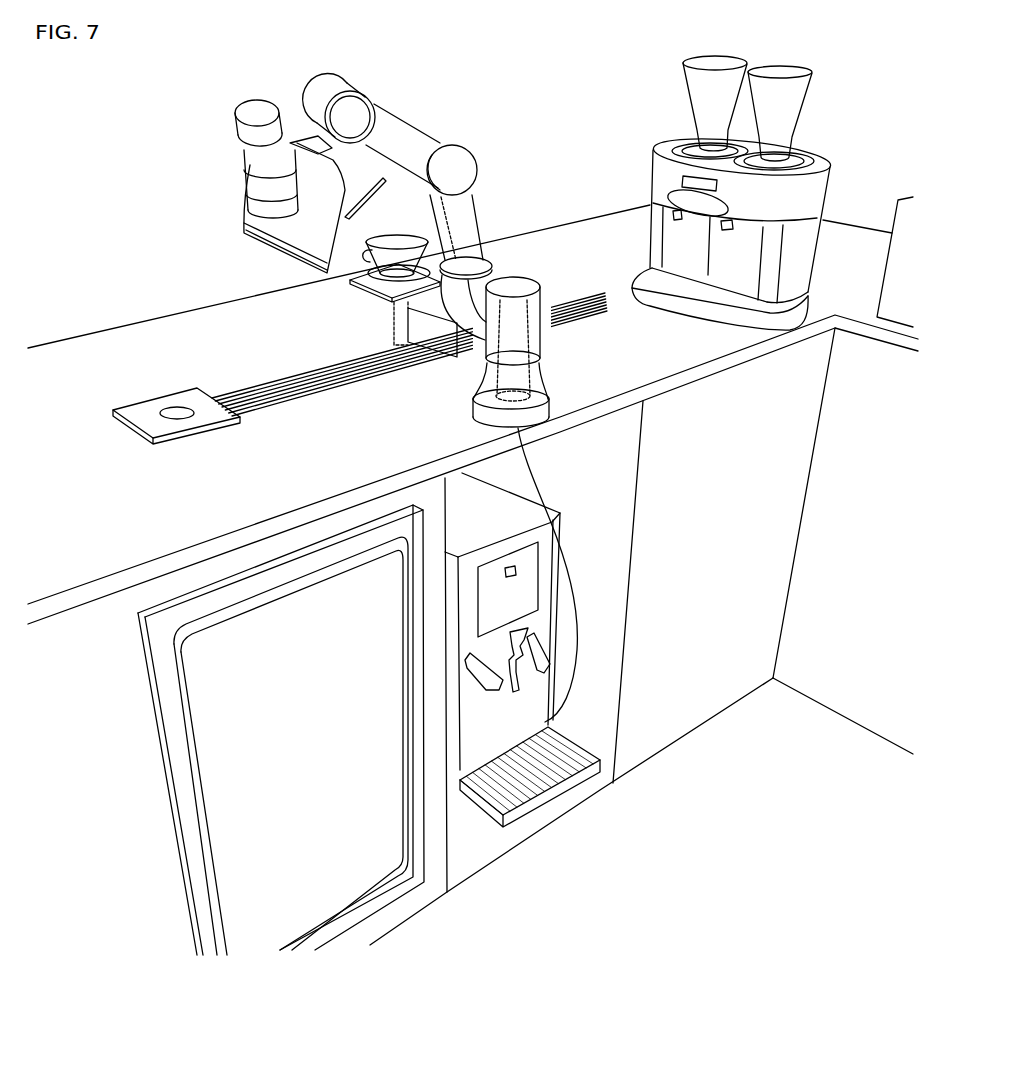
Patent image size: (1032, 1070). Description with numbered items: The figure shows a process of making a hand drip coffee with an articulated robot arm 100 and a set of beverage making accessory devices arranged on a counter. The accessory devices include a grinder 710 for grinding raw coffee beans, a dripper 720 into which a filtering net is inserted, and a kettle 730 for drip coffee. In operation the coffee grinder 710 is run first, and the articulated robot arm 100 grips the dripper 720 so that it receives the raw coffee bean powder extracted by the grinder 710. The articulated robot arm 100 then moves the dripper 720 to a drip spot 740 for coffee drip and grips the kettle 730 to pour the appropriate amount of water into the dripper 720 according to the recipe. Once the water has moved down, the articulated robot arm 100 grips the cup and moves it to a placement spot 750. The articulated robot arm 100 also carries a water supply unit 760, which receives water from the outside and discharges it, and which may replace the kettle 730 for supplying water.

The articulated robot arm 100 is at (397, 121).
The grinder 710 is at (657, 147).
The dripper 720 is at (368, 262).
The kettle 730 is at (240, 180).
The drip spot 740 is at (392, 299).
The placement spot 750 is at (204, 433).
The water supply unit 760 is at (277, 160).